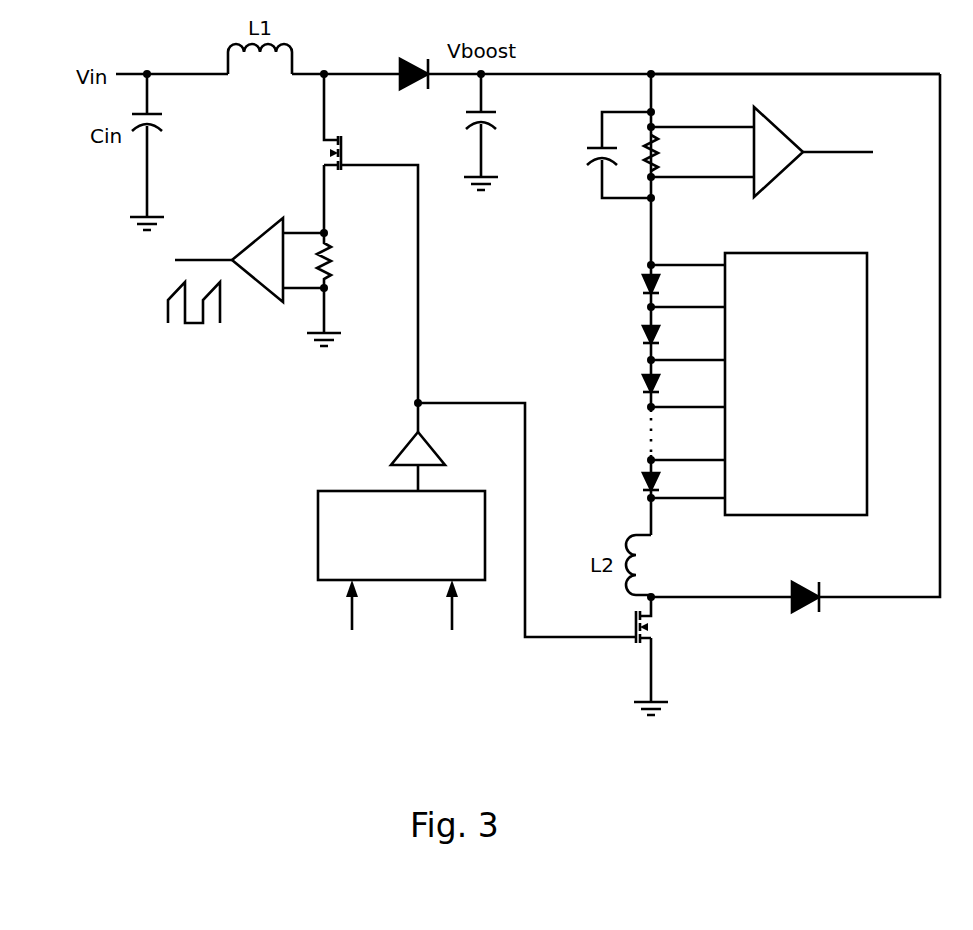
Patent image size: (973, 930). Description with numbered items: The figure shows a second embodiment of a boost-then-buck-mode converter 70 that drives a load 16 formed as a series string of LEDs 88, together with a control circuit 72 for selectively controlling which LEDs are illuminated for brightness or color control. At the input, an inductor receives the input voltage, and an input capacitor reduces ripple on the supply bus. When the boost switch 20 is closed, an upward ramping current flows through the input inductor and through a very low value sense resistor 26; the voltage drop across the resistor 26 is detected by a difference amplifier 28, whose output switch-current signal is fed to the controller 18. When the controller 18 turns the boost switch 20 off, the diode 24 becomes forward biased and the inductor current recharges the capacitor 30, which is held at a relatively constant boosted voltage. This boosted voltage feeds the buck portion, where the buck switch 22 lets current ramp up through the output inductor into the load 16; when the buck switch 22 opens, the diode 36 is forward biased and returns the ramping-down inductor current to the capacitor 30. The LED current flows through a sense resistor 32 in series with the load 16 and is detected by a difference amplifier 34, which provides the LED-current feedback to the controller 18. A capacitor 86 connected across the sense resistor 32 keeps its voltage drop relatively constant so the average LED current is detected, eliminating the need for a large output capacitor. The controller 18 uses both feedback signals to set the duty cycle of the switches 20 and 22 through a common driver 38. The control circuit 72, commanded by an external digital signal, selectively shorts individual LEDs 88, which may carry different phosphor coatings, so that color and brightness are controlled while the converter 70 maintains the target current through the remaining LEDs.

The boost-then-buck-mode converter 70 is at (732, 24).
The diode 24 is at (418, 57).
The capacitor 86 is at (585, 142).
The sense resistor 32 is at (668, 163).
The difference amplifier 34 is at (775, 183).
The control circuit 72 is at (815, 252).
The boost switch 20 is at (305, 143).
The capacitor 30 is at (448, 113).
The difference amplifier 28 is at (252, 243).
The sense resistor 26 is at (342, 262).
The load 16 is at (618, 398).
The LEDs 88 is at (642, 378).
The driver 38 is at (400, 452).
The controller 18 is at (317, 535).
The diode 36 is at (800, 580).
The buck switch 22 is at (668, 623).